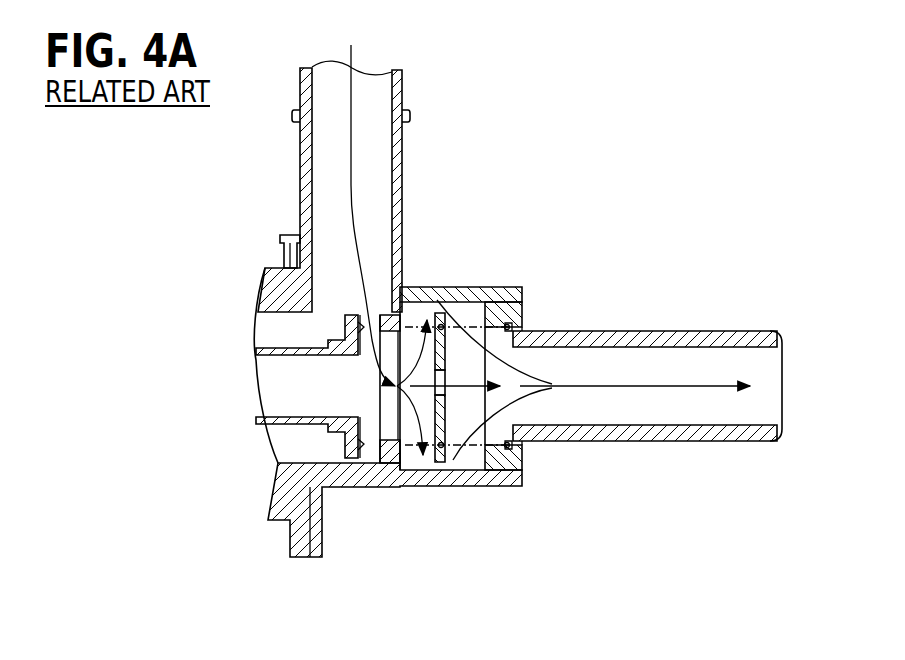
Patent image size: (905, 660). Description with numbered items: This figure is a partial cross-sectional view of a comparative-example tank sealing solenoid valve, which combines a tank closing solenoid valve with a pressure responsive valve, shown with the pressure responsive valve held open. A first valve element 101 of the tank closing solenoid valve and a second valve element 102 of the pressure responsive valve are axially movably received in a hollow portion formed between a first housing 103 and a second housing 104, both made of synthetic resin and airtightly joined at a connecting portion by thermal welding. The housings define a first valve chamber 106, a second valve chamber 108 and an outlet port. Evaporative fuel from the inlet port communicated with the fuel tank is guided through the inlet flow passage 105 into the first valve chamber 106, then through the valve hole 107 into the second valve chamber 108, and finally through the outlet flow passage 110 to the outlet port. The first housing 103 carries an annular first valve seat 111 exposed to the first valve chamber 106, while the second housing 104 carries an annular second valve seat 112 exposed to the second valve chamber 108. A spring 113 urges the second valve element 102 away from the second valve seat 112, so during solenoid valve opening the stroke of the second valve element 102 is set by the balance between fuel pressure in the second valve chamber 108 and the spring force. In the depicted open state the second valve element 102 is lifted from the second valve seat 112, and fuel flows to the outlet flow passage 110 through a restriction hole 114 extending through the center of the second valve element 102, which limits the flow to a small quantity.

The first valve element 101 is at (337, 437).
The second valve element 102 is at (440, 300).
The first housing 103 is at (402, 158).
The second housing 104 is at (652, 333).
The inlet flow passage 105 is at (323, 162).
The first valve chamber 106 is at (277, 328).
The valve hole 107 is at (376, 430).
The second valve chamber 108 is at (410, 463).
The outlet flow passage 110 is at (712, 413).
The first valve seat 111 is at (380, 322).
The second valve seat 112 is at (475, 307).
The spring 113 is at (530, 332).
The restriction hole 114 is at (435, 463).